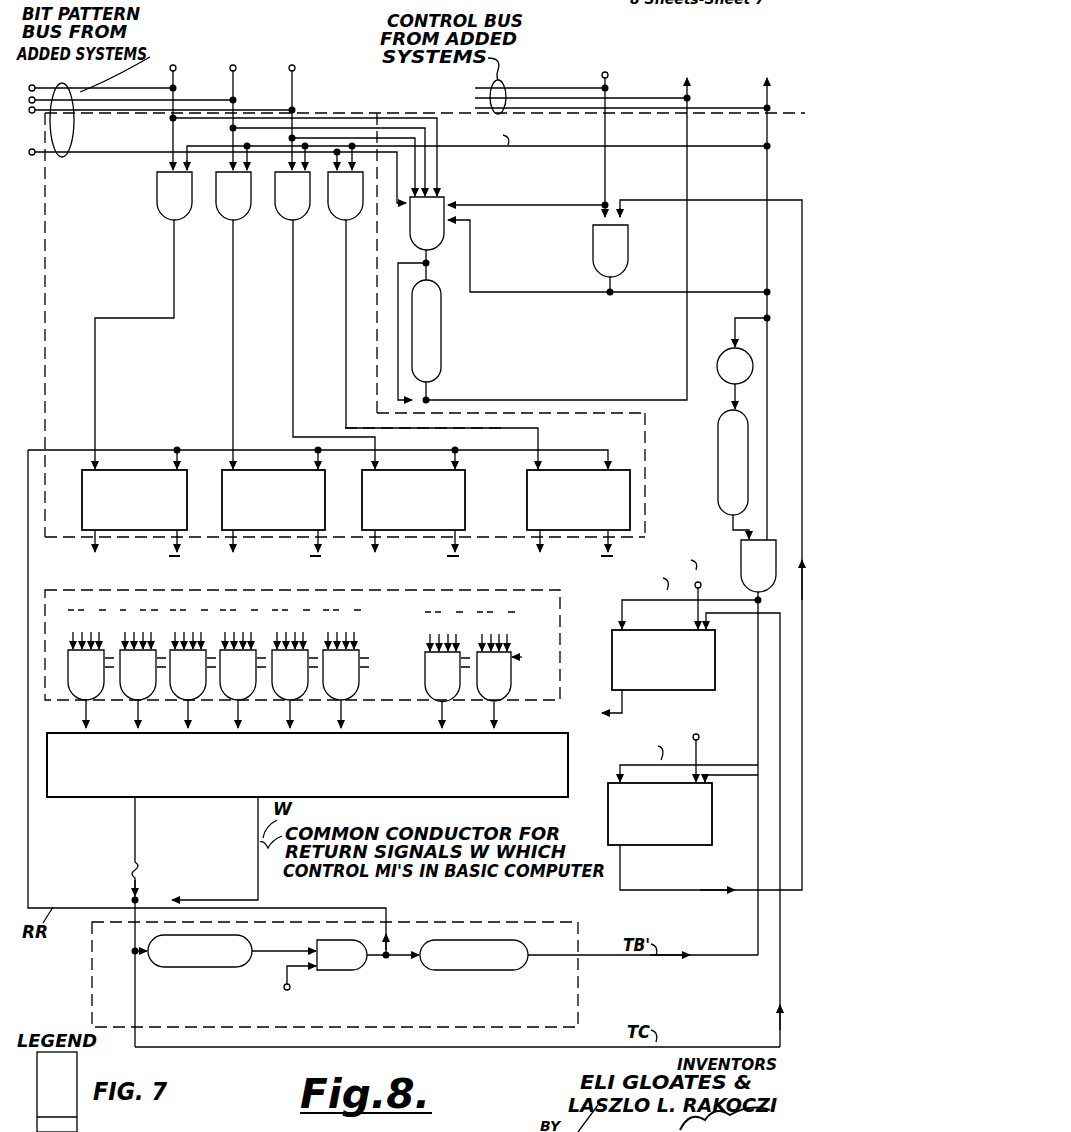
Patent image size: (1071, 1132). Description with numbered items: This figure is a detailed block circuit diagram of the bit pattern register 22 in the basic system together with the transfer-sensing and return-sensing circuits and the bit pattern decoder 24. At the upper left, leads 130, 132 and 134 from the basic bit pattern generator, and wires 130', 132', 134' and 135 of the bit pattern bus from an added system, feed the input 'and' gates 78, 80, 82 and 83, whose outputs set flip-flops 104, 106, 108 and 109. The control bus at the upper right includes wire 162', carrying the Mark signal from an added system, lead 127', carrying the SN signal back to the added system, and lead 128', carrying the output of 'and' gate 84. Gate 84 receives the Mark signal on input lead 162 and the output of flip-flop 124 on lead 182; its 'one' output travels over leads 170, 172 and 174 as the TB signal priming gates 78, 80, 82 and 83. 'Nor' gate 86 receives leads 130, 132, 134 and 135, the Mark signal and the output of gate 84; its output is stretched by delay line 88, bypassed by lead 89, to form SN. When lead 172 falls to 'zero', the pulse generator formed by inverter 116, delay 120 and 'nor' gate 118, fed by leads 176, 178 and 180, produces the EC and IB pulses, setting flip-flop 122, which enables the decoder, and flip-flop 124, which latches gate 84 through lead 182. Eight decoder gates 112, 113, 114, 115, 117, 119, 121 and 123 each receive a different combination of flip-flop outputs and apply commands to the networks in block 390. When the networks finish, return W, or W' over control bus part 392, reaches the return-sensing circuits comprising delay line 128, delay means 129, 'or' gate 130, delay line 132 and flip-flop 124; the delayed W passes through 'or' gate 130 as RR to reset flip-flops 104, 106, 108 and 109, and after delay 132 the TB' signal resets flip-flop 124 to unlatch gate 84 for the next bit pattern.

The bit pattern register 22 is at (107, 258).
The decoder gates 24 is at (508, 586).
The 'and' gate 78 is at (157, 188).
The 'and' gate 80 is at (222, 220).
The 'and' gate 82 is at (280, 220).
The 'and' gate 83 is at (346, 222).
The 'and' gate 84 is at (592, 247).
The 'nor' gate 86 is at (414, 245).
The delay line 88 is at (441, 336).
The lead 89 is at (398, 275).
The flip-flop 104 is at (82, 497).
The flip-flop 106 is at (222, 497).
The flip-flop 108 is at (362, 497).
The flip-flop 109 is at (526, 497).
The 'nor' gate 112 is at (81, 669).
The decoder gate 113 is at (131, 701).
The 'nor' gate 114 is at (183, 701).
The decoder gate 115 is at (233, 701).
The inverter 116 is at (732, 345).
The decoder gate 117 is at (285, 701).
The 'nor' gate 118 is at (740, 558).
The decoder gate 119 is at (337, 701).
The delay 120 is at (718, 440).
The decoder gate 121 is at (429, 670).
The flip-flop 122 is at (708, 692).
The decoder gate 123 is at (511, 685).
The flip-flop 124 is at (675, 848).
The lead 127' is at (660, 75).
The delay line 128 is at (772, 294).
The lead 128' is at (729, 92).
The delay means 129 is at (192, 967).
The lead / 'or' gate 130 is at (291, 528).
The wire 130' is at (128, 78).
The lead / delay line 132 is at (375, 524).
The wire 132' is at (209, 88).
The lead 134 is at (296, 107).
The wire 134' is at (265, 93).
The lead 135 is at (138, 142).
The input lead 162 is at (551, 133).
The wire 162' is at (621, 86).
The lead 170 is at (720, 290).
The lead 172 is at (767, 248).
The lead 174 is at (570, 144).
The lead 176 is at (768, 372).
The lead 178 is at (733, 530).
The lead 180 is at (742, 318).
The output lead 182 is at (743, 199).
The networks block 390 is at (512, 800).
The control bus part 392 is at (132, 872).